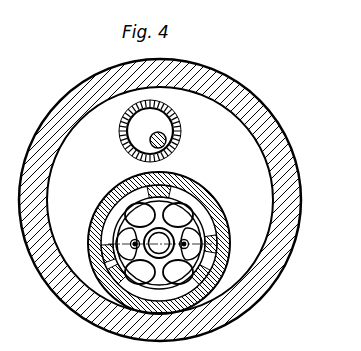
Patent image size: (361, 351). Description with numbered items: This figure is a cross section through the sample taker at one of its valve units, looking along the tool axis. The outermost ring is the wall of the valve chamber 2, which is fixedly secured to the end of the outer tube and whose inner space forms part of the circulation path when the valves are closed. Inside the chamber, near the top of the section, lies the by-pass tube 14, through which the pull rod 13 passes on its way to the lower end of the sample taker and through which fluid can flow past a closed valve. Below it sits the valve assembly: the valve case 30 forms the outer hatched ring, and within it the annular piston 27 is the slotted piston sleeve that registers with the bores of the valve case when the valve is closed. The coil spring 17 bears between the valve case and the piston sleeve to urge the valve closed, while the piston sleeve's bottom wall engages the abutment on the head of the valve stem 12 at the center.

The valve chamber 2 is at (218, 147).
The valve stem 12 is at (132, 245).
The pull rod 13 is at (182, 127).
The by-pass tube 14 is at (119, 129).
The coil spring 17 is at (201, 244).
The annular piston 27 is at (213, 267).
The valve case 30 is at (213, 285).